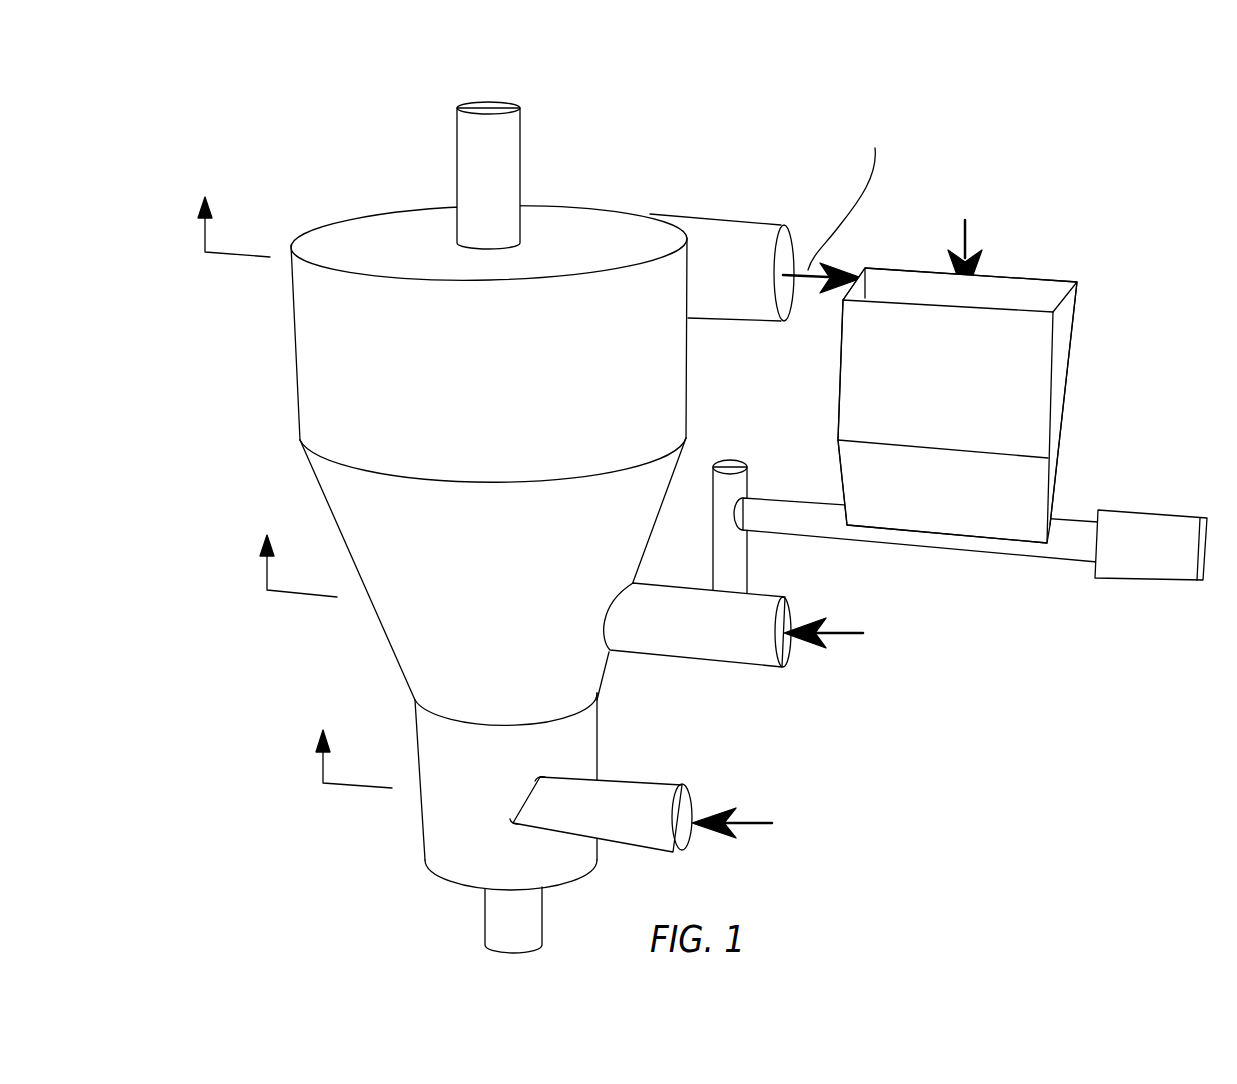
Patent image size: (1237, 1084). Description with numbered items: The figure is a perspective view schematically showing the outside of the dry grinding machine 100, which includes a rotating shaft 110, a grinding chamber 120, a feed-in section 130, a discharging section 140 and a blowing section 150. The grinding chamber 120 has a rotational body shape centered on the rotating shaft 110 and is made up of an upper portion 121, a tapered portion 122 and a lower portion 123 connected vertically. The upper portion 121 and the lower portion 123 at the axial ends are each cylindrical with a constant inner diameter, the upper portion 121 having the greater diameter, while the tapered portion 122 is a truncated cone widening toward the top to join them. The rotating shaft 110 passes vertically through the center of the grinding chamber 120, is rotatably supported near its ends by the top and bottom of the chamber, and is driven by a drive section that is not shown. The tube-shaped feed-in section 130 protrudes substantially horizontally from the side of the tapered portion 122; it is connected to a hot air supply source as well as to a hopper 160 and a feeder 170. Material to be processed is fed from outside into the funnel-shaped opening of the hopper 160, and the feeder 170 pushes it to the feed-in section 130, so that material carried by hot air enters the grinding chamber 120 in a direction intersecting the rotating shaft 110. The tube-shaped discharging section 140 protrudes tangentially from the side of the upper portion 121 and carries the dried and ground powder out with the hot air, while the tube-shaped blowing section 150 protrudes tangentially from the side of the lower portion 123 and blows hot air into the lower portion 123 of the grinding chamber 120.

The dry grinding machine 100 is at (252, 102).
The rotating shaft 110 is at (520, 163).
The grinding chamber 120 is at (333, 193).
The upper portion 121 is at (298, 361).
The tapered portion 122 is at (385, 633).
The lower portion 123 is at (425, 832).
The feed-in section 130 is at (703, 653).
The discharging section 140 is at (733, 215).
The blowing section 150 is at (634, 840).
The hopper 160 is at (1067, 395).
The feeder 170 is at (1135, 585).